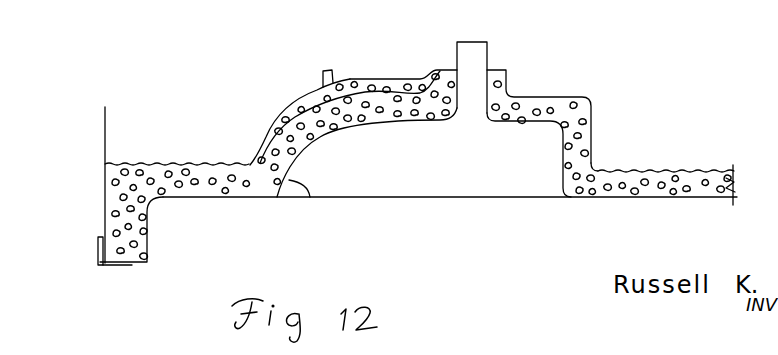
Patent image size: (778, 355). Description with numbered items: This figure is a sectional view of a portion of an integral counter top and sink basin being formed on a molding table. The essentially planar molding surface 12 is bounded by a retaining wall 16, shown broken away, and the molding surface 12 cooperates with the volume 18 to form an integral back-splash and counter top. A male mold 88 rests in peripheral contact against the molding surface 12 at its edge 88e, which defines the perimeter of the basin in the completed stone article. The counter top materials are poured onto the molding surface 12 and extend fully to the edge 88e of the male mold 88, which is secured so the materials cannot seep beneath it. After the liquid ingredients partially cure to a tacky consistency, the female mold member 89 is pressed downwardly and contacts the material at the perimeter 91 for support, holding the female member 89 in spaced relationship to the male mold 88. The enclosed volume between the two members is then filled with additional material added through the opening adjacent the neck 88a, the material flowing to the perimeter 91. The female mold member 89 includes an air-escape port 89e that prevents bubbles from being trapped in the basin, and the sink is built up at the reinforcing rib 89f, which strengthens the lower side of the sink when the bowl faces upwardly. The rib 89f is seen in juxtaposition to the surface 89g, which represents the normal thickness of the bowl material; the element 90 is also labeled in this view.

The molding surface 12 is at (513, 197).
The wall 16 is at (105, 158).
The volume 18 is at (140, 190).
The male mold 88 is at (415, 122).
The neck 88a is at (468, 42).
The edge 88e is at (308, 198).
The female mold member 89 is at (533, 97).
The air-escape port 89e is at (327, 69).
The reinforcing rib 89f is at (287, 109).
The surface 89g is at (360, 78).
The outer surface layer 90 is at (687, 170).
The perimeter 91 is at (593, 164).